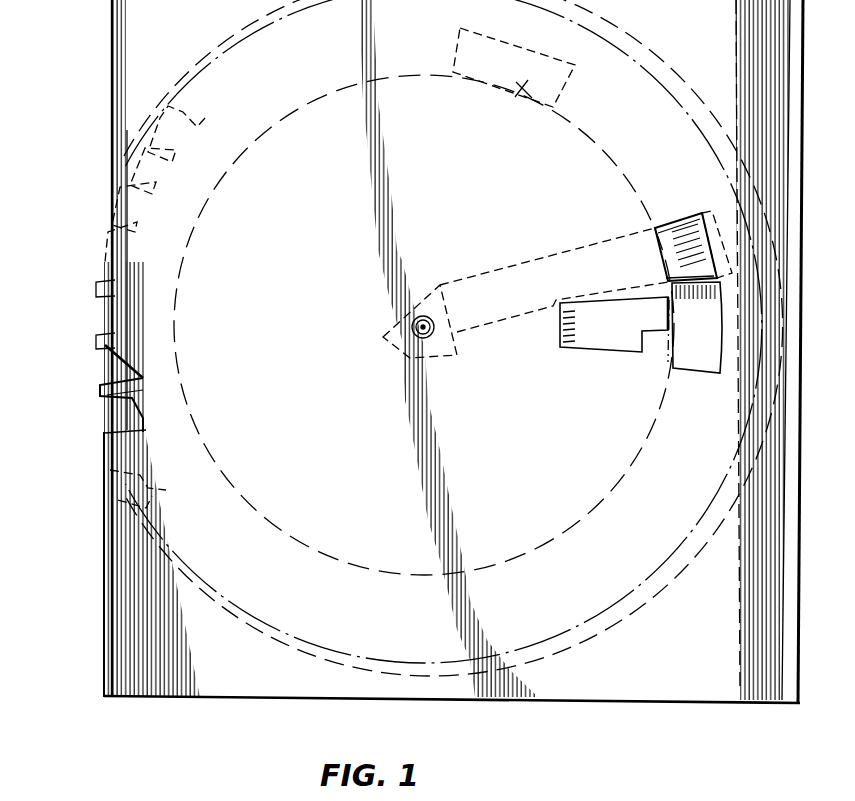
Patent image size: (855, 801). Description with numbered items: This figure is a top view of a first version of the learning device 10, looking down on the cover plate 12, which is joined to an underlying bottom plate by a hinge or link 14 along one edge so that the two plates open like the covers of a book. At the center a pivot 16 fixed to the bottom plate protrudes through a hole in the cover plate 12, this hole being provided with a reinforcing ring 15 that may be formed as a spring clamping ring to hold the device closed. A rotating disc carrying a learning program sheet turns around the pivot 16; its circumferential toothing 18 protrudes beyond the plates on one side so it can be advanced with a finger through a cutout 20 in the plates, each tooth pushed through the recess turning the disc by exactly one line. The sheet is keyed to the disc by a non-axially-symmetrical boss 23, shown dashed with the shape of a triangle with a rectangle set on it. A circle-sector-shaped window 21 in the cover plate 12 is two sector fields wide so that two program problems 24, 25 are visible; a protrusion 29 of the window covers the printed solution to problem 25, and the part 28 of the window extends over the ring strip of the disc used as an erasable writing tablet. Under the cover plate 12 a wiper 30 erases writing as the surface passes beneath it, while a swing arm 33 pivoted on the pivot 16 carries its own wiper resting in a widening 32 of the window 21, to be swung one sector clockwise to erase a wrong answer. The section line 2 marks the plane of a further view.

The section line 2- 2 is at (112, 410).
The device 10 is at (578, 722).
The cover plate 12 is at (240, 683).
The hinge or link 14 is at (796, 704).
The reinforcing ring 15 is at (434, 342).
The pivot 16 is at (415, 343).
The circumferential toothing 18 is at (145, 378).
The cutout 20 is at (110, 352).
The window 21 is at (598, 352).
The non-axially-symmetrical boss 23 is at (410, 300).
The program problem 24 is at (560, 318).
The program problem 25 is at (576, 332).
The part of the window 28 is at (708, 362).
The protrusion 29 is at (652, 334).
The wiper 30 is at (538, 78).
The widening 32 is at (680, 228).
The swing arm 33 is at (563, 258).